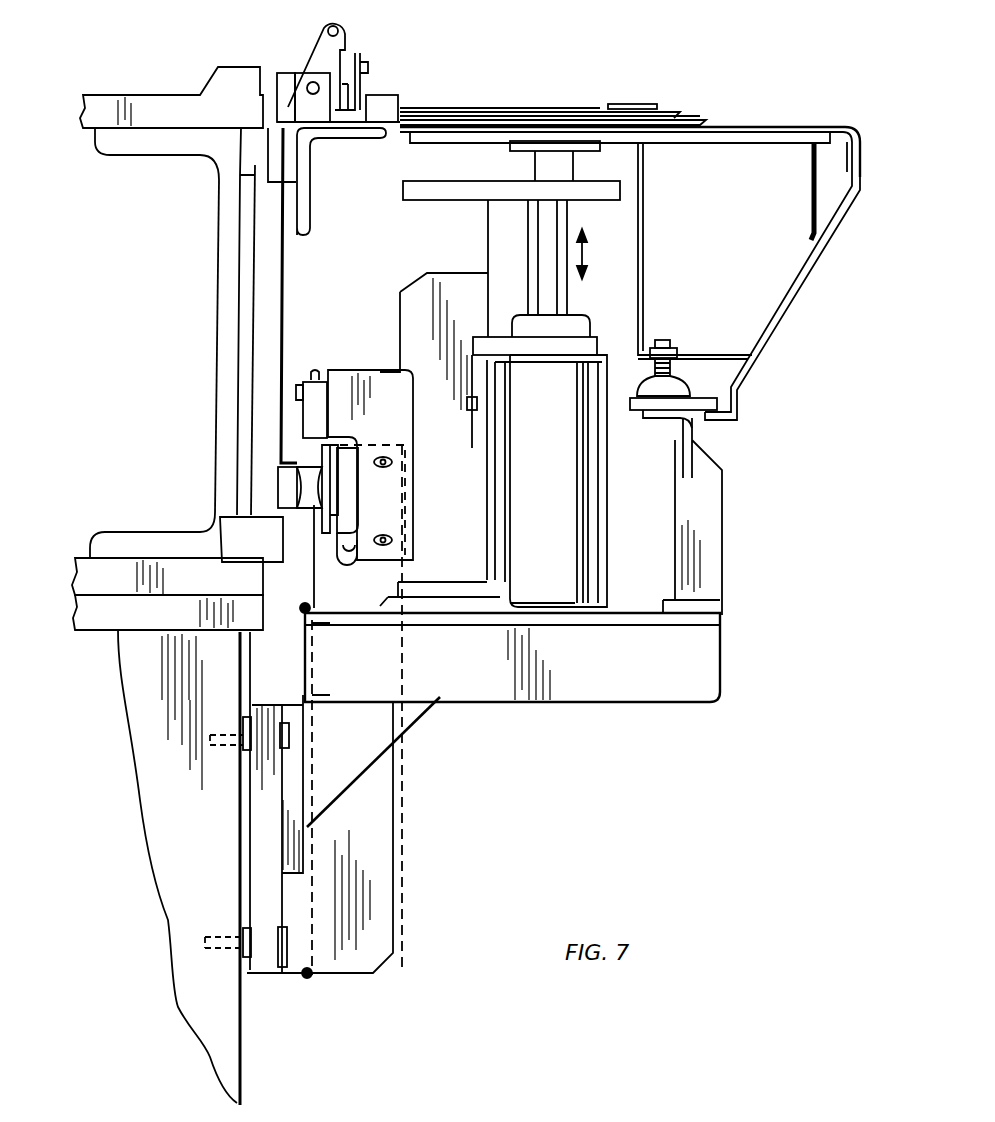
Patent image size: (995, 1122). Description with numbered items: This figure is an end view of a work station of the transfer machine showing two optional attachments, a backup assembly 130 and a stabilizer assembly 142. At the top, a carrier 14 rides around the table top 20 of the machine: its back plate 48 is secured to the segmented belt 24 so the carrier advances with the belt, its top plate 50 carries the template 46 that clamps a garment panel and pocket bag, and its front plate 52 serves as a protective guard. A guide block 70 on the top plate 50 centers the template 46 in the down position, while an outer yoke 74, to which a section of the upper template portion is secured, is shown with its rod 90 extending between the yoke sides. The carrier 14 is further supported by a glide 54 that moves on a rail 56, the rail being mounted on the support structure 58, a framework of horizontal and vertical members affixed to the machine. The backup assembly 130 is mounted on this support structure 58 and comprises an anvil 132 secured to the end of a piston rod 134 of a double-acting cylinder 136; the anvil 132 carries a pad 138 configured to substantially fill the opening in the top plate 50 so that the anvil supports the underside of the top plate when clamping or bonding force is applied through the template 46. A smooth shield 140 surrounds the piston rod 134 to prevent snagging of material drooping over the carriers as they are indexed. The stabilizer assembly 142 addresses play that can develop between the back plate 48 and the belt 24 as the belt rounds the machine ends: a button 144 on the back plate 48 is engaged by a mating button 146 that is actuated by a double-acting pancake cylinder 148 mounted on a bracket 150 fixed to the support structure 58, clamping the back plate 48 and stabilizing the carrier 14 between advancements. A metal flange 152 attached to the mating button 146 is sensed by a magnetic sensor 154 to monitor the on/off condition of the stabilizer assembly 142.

The carrier 14 is at (800, 126).
The table top 20 is at (165, 98).
The segmented belt 24 is at (248, 213).
The template 46 is at (622, 106).
The back plate 48 is at (270, 268).
The top plate 50 is at (727, 126).
The front plate 52 is at (800, 283).
The glide 54 is at (688, 388).
The rail 56 is at (715, 418).
The support structure 58 is at (728, 686).
The guide block 70 is at (393, 108).
The outer yoke 74 is at (333, 52).
The rod 90 is at (327, 33).
The backup assembly 130 is at (465, 267).
The anvil 132 is at (515, 148).
The piston rod 134 is at (553, 285).
The double-acting cylinder 136 is at (571, 531).
The pad 138 is at (583, 149).
The shield 140 is at (608, 196).
The stabilizer assembly 142 is at (334, 354).
The button 144 is at (285, 488).
The mating button 146 is at (317, 512).
The double-acting pancake cylinder 148 is at (345, 493).
The bracket 150 is at (383, 832).
The metal flange 152 is at (299, 740).
The magnetic sensor 154 is at (313, 425).